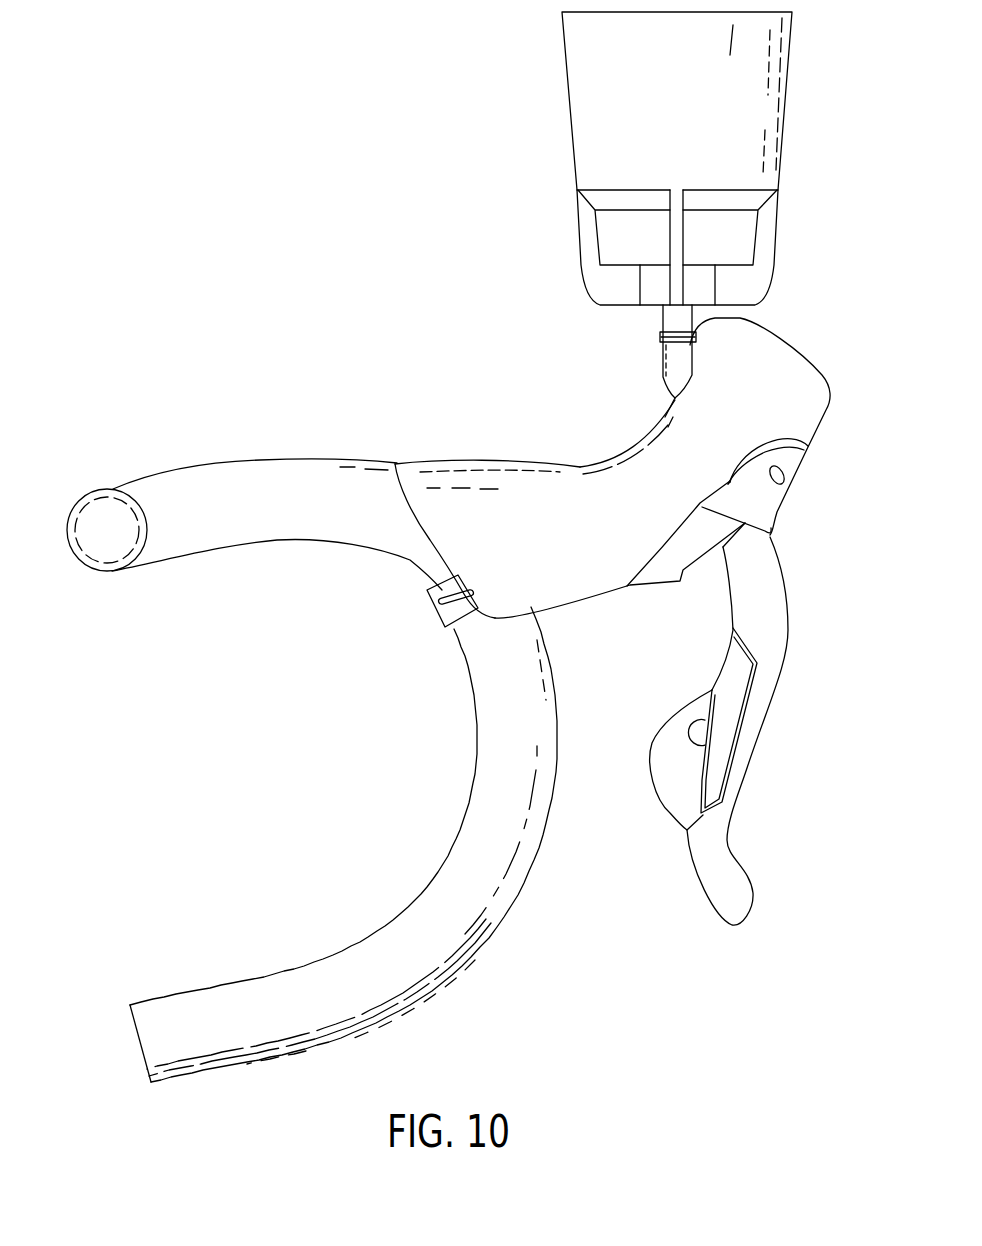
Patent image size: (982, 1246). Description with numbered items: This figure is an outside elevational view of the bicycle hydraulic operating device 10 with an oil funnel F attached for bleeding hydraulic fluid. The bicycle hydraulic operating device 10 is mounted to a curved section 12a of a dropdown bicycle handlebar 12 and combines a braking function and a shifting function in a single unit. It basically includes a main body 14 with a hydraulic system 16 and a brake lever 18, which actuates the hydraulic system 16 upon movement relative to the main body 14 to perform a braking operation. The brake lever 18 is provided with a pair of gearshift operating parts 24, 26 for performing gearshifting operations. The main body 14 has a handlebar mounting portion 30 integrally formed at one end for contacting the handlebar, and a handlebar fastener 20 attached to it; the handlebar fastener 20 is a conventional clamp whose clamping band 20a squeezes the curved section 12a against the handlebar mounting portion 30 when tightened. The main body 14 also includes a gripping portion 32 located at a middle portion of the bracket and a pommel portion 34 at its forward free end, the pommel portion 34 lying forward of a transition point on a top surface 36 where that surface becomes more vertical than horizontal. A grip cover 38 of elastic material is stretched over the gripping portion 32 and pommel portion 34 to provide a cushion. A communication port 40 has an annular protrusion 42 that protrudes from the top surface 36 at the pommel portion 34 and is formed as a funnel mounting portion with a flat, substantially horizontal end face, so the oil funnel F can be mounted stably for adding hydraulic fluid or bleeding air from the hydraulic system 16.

The oil funnel F is at (542, 110).
The bicycle hydraulic operating device 10 is at (535, 390).
The dropdown bicycle handlebar 12 is at (181, 463).
The curved section 12a is at (472, 779).
The main body 14 is at (659, 597).
The hydraulic system 16 is at (553, 523).
The brake lever 18 is at (714, 724).
The handlebar fastener 20 is at (410, 626).
The clamping band 20a is at (443, 582).
The gearshift operating part 24 is at (710, 758).
The gearshift operating part 26 is at (672, 762).
The handlebar mounting portion 30 is at (417, 541).
The gripping portion 32 is at (491, 452).
The pommel portion 34 is at (802, 350).
The top surface 36 is at (448, 460).
The grip cover 38 is at (618, 497).
The communication port 40 is at (654, 360).
The protrusion 42 is at (678, 371).